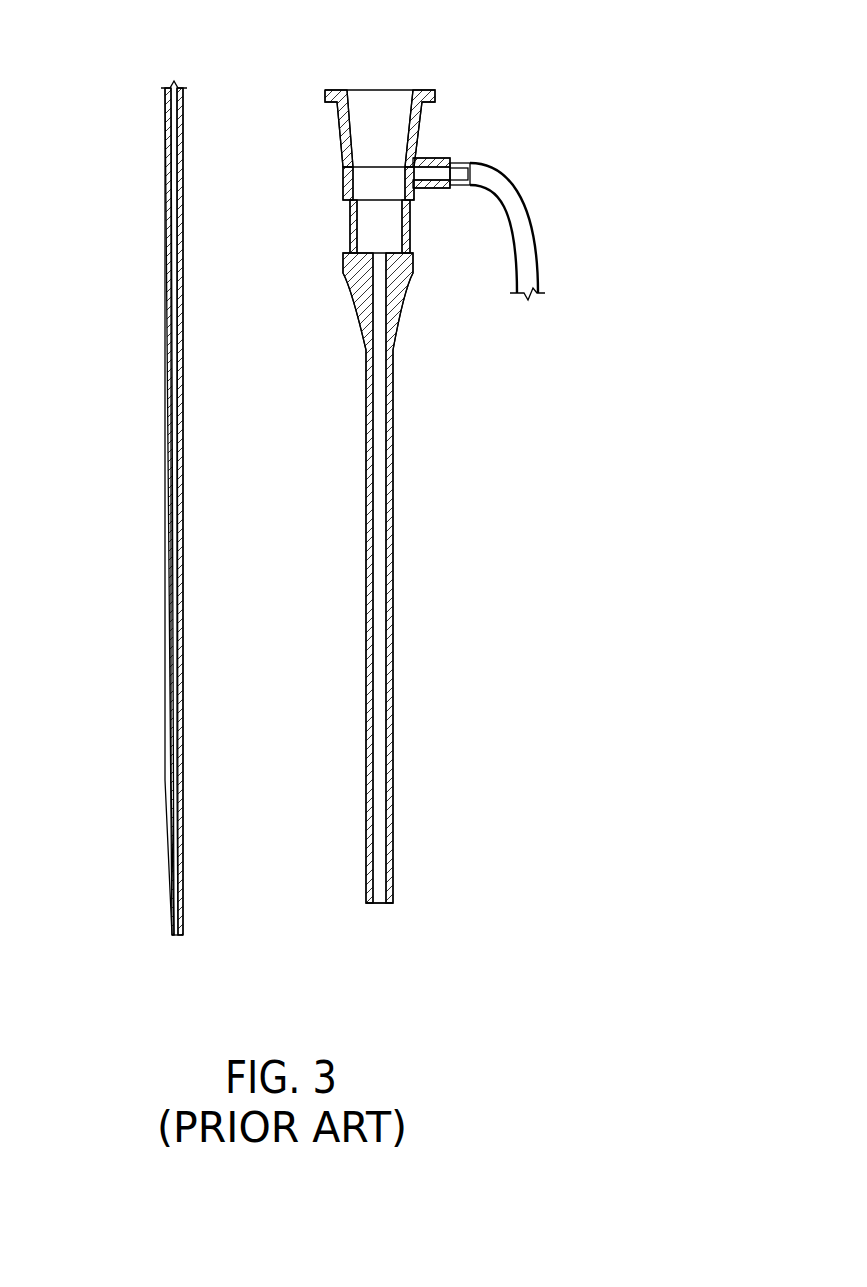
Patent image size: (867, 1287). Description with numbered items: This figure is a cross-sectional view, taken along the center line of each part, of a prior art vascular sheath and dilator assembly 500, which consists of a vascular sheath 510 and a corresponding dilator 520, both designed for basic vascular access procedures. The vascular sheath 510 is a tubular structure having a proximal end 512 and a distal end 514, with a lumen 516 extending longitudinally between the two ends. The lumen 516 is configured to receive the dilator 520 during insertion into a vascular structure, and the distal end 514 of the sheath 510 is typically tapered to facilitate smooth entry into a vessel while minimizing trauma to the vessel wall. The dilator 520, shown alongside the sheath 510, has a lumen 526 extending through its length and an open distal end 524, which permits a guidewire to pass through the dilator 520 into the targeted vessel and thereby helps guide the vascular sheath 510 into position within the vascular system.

The vascular sheath and dilator assembly 500 is at (585, 99).
The vascular sheath 510 is at (416, 614).
The proximal end 512 is at (353, 90).
The distal end 514 is at (379, 903).
The lumen 516 is at (380, 833).
The dilator 520 is at (118, 508).
The distal end 524 is at (168, 935).
The lumen 526 is at (172, 810).